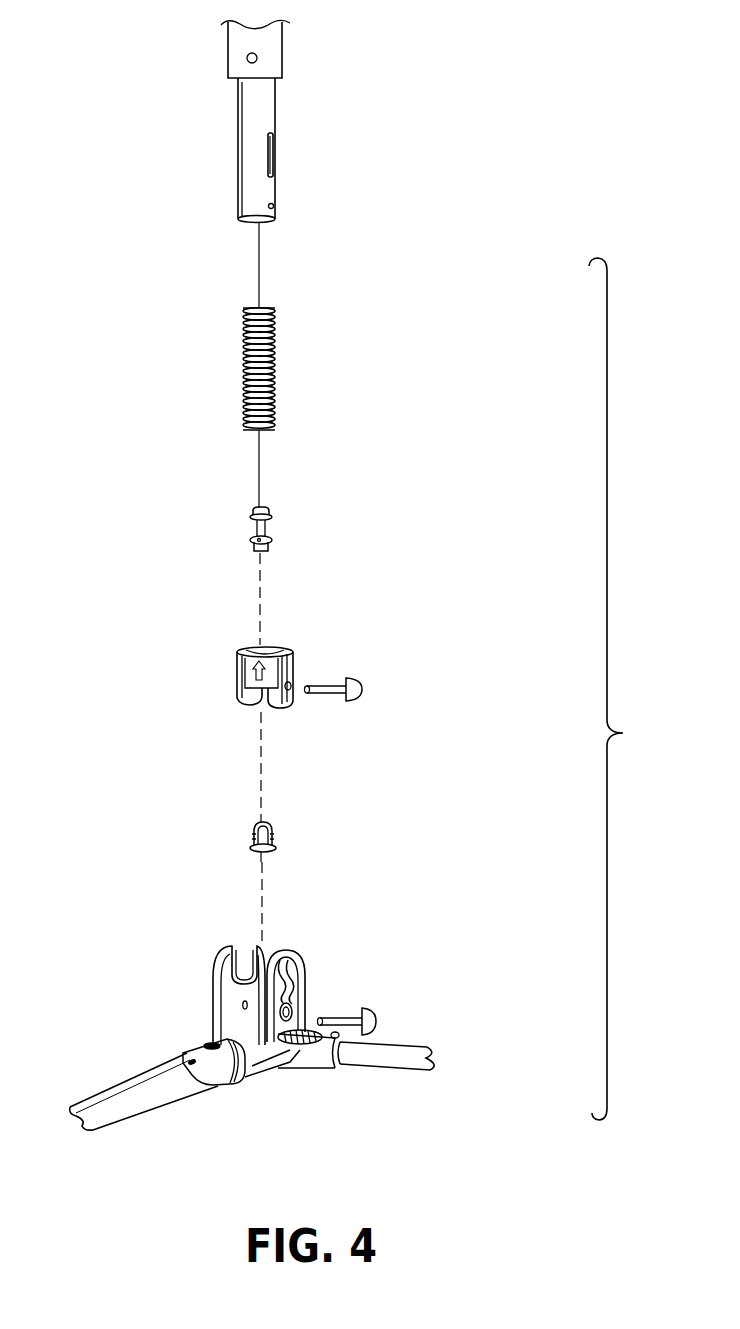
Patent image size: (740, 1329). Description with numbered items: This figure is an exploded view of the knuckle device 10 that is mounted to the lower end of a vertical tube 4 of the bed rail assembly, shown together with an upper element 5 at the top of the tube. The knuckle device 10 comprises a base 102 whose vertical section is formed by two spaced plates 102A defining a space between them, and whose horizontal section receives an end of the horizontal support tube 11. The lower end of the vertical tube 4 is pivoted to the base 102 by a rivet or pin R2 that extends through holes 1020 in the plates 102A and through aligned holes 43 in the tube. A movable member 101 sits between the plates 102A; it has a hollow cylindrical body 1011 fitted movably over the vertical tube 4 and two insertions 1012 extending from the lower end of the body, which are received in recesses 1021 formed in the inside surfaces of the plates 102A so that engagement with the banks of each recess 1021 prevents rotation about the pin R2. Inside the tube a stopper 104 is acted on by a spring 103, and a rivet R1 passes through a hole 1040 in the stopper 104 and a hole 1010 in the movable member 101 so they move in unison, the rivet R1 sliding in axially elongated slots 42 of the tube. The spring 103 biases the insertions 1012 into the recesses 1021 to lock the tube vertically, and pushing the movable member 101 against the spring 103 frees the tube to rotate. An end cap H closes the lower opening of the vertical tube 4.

The upper connector block 5 is at (272, 62).
The vertical tube 4 is at (262, 106).
The slot 42 is at (275, 155).
The hole 43 is at (275, 206).
The spring 103 is at (273, 355).
The stopper 104 is at (273, 520).
The hole 1040 is at (252, 540).
The movable member 101 is at (281, 697).
The hollow cylindrical body 1011 is at (255, 645).
The insertion 1012 is at (240, 700).
The hole 1010 is at (292, 700).
The rivet R1 is at (350, 688).
The end cap H is at (277, 835).
The base 102 is at (320, 953).
The plate 102A is at (220, 965).
The recess 1021 is at (247, 946).
The hole 1020 is at (241, 1005).
The horizontal support tube 11 is at (120, 1095).
The rivet or pin R2 is at (378, 1022).
The knuckle device 10 is at (620, 689).